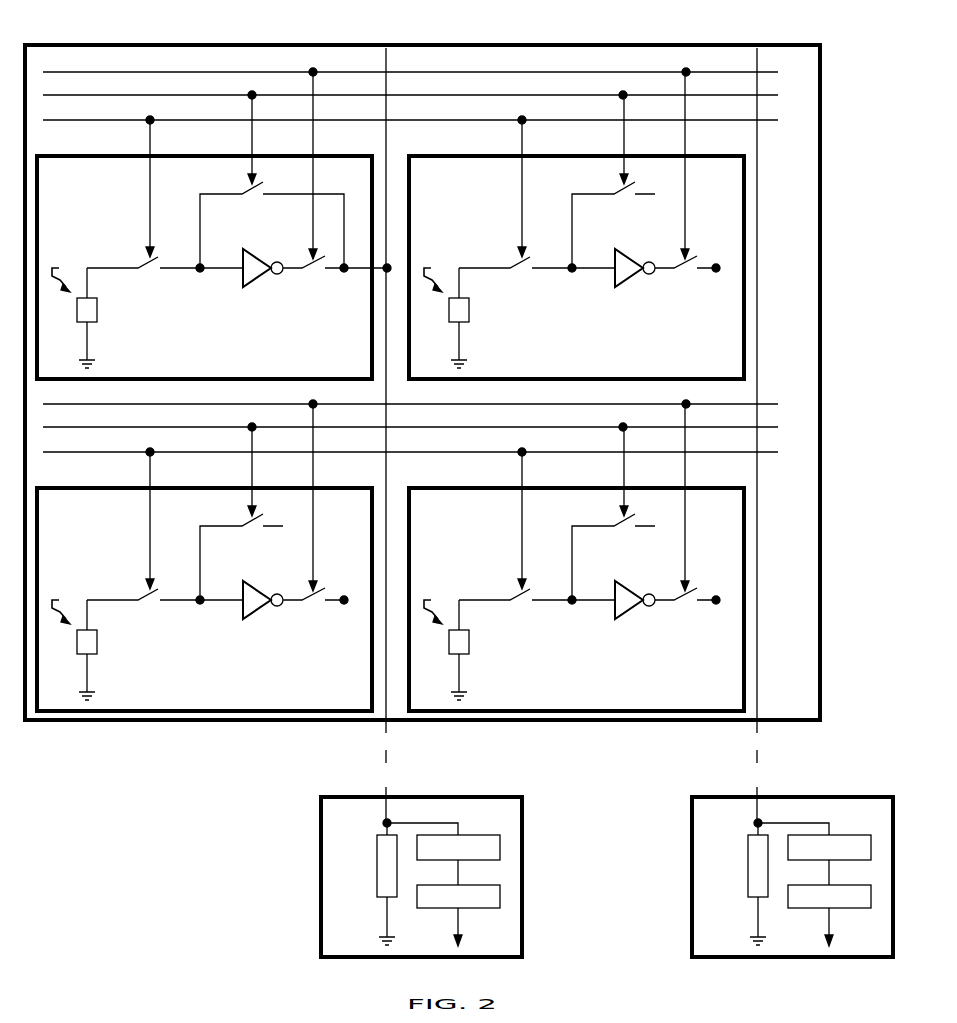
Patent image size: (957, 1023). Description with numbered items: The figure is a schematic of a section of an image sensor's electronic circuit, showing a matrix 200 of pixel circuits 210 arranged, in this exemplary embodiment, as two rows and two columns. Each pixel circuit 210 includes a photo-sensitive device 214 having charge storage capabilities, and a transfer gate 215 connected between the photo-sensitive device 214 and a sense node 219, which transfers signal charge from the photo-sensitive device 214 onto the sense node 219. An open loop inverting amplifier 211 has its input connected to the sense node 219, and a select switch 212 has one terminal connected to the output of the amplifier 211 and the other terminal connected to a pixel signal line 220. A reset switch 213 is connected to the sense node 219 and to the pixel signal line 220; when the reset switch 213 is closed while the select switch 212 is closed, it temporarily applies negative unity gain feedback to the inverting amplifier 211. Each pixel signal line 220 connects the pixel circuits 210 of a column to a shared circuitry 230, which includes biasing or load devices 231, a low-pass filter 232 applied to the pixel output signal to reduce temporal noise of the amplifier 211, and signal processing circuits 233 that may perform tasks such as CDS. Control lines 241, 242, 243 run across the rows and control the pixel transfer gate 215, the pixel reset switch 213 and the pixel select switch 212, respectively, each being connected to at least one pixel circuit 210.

The matrix 200 is at (422, 382).
The pixel circuit 210 is at (390, 391).
The open loop inverting amplifier 211 is at (427, 443).
The select switch 212 is at (501, 350).
The reset switch 213 is at (427, 347).
The photo-sensitive device 214 is at (257, 484).
The transfer gate 215 is at (329, 374).
The sense node 219 is at (387, 446).
The pixel signal line 220 is at (557, 435).
The shared circuitry 230 is at (607, 877).
The load device 231 is at (556, 884).
The low-pass filter 232 is at (644, 839).
The signal processing circuit 233 is at (644, 903).
The control line 241 is at (410, 279).
The control line 242 is at (410, 255).
The control line 243 is at (410, 231).